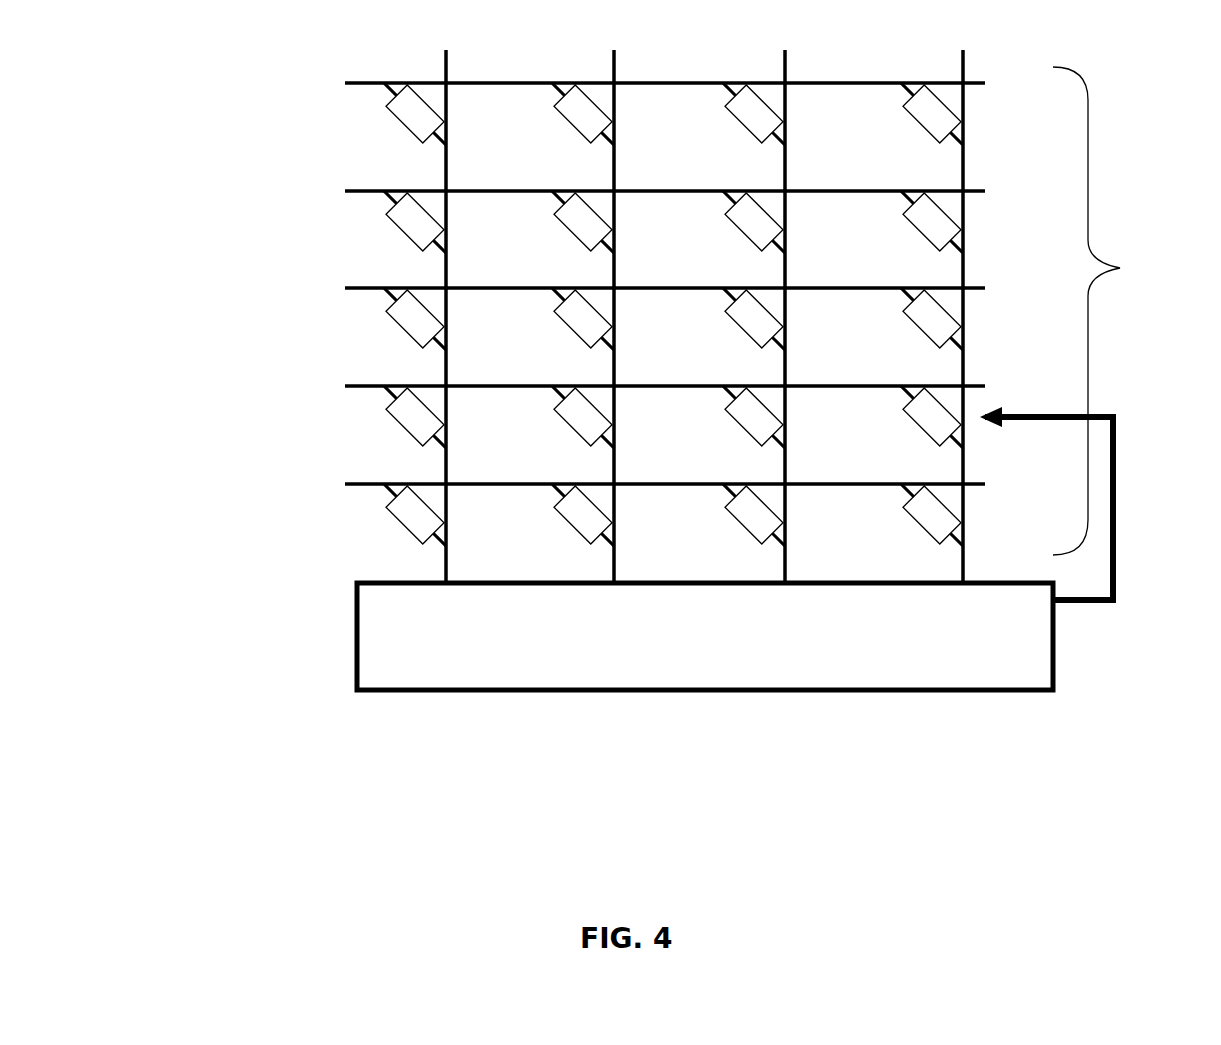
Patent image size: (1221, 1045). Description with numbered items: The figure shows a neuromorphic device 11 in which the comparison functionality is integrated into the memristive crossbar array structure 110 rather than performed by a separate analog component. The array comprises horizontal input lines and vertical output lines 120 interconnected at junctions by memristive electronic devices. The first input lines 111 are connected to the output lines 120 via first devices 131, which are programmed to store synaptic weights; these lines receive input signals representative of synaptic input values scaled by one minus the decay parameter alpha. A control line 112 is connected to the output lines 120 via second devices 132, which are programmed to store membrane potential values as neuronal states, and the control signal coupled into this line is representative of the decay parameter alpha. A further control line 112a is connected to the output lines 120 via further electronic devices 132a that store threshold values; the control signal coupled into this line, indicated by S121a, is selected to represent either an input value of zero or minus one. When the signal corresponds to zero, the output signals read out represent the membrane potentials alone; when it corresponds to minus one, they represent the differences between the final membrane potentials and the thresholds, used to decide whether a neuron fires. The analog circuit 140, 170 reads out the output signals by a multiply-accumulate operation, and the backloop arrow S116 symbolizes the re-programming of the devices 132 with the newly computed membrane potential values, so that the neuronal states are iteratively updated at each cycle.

The neuromorphic device 11 is at (210, 793).
The crossbar array structure 110 is at (1125, 311).
The first input lines 111 is at (468, 83).
The control line 112 is at (618, 383).
The further control line 112a is at (618, 480).
The output lines 120 is at (615, 185).
The first devices 131 is at (770, 105).
The second devices 132 is at (557, 405).
The further electronic devices 132a is at (575, 510).
The circuit component 140 is at (355, 605).
The analog circuit component 170 is at (376, 690).
The updating step S116 is at (1025, 413).
The bias input step S121a is at (225, 488).